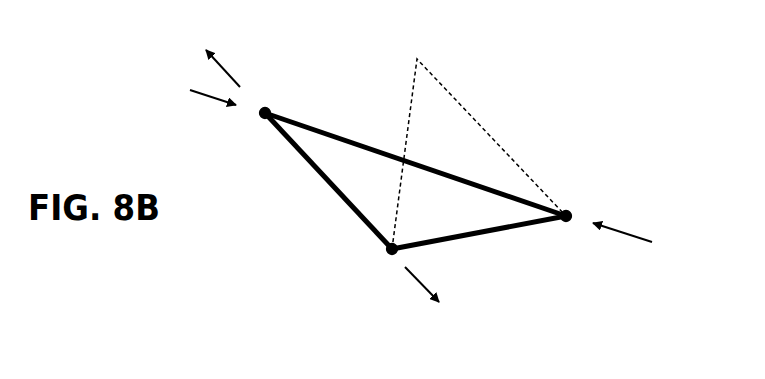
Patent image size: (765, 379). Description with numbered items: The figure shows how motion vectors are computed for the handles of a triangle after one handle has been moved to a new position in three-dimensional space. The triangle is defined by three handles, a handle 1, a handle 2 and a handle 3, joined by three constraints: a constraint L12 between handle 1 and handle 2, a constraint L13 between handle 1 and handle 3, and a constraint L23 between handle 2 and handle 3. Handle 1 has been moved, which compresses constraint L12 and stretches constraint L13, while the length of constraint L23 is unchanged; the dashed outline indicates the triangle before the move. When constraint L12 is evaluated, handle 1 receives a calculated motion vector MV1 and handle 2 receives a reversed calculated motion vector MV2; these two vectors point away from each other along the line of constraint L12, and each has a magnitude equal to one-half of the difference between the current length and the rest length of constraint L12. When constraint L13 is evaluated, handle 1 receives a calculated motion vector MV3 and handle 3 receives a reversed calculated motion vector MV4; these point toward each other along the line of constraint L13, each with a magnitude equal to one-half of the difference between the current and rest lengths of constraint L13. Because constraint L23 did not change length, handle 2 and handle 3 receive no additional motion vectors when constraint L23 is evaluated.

The handle 1 is at (263, 99).
The handle 2 is at (389, 267).
The handle 3 is at (573, 234).
The constraint L12 is at (322, 182).
The constraint L13 is at (336, 133).
The constraint L23 is at (515, 229).
The motion vector MV1 is at (203, 51).
The motion vector MV2 is at (434, 306).
The motion vector MV3 is at (185, 91).
The motion vector MV4 is at (648, 242).